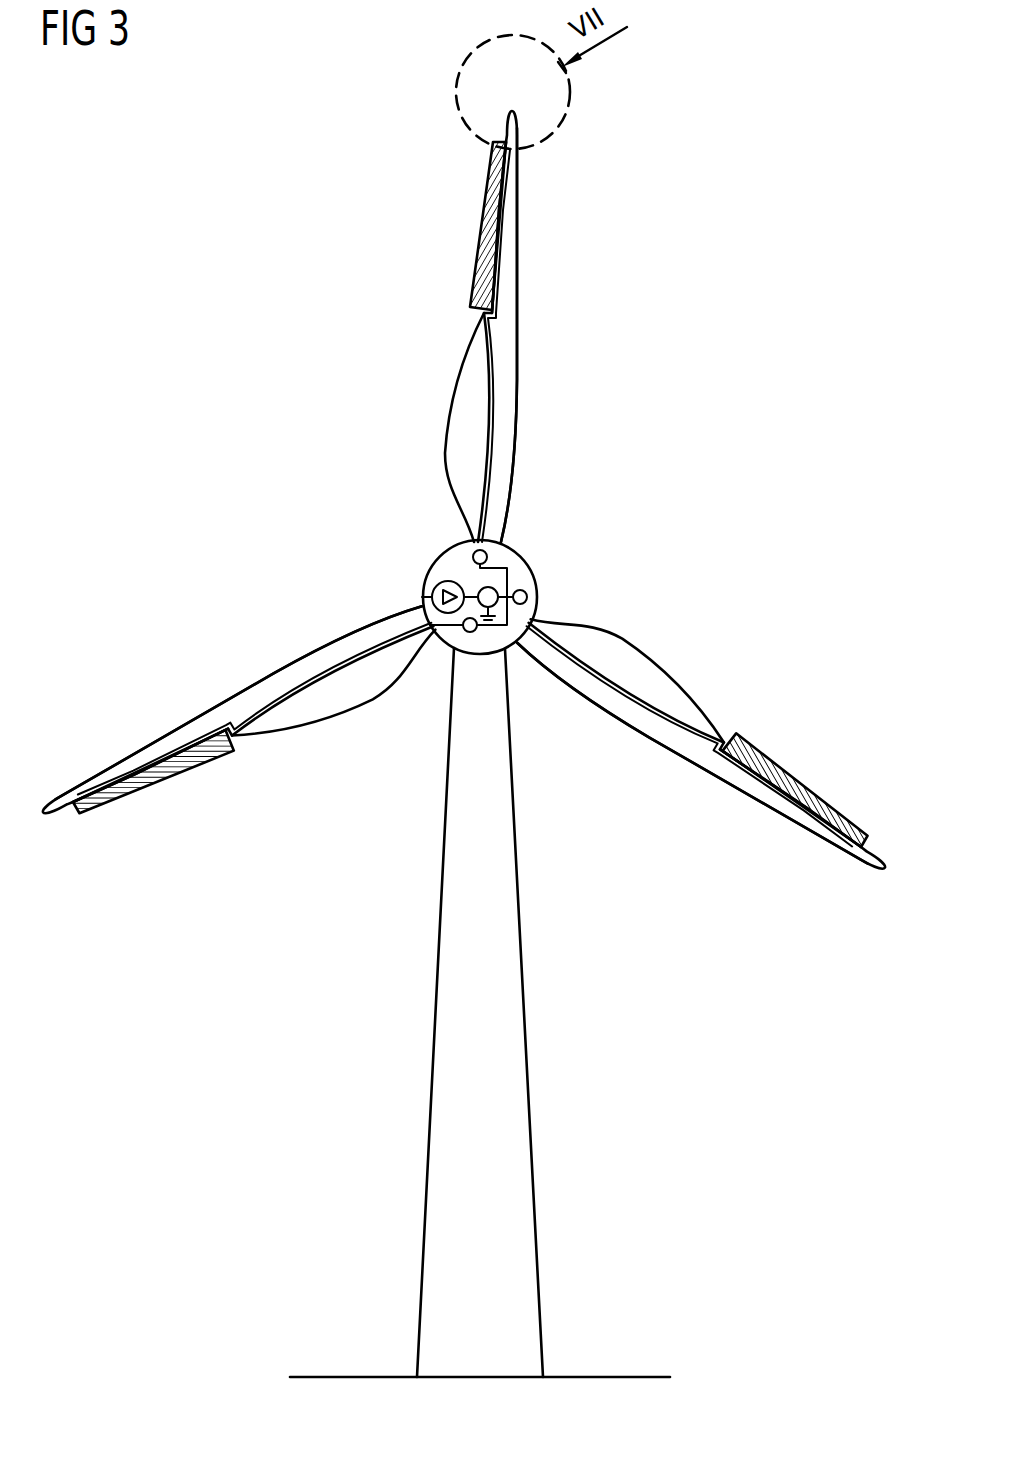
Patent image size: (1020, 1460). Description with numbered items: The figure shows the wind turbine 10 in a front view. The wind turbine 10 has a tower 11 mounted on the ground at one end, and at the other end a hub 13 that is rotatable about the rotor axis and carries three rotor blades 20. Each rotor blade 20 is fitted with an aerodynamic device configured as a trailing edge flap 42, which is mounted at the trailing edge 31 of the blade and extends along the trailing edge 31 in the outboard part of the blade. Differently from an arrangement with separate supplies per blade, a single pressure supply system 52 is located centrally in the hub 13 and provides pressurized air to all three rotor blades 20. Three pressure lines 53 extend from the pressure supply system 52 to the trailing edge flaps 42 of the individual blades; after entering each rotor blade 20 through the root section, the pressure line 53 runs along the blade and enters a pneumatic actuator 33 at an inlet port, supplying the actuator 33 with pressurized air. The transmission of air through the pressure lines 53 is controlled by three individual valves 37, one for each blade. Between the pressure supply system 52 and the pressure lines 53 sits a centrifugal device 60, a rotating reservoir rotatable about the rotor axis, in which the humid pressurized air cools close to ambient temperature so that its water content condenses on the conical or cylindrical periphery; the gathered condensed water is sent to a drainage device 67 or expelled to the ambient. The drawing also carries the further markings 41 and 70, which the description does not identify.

The wind turbine 10 is at (694, 523).
The tower 11 is at (529, 1112).
The hub 13 is at (457, 548).
The rotor blade 20 is at (500, 306).
The trailing edge 31 is at (444, 437).
The pneumatic actuator 33 is at (506, 162).
The valve 37 is at (488, 557).
The blade outer surface 41 is at (516, 420).
The trailing edge flap 42 is at (486, 226).
The pressure supply system 52 is at (422, 597).
The pressure line 53 is at (490, 392).
The centrifugal device 60 is at (445, 580).
The drainage device 67 is at (508, 632).
The rotor 70 is at (531, 370).